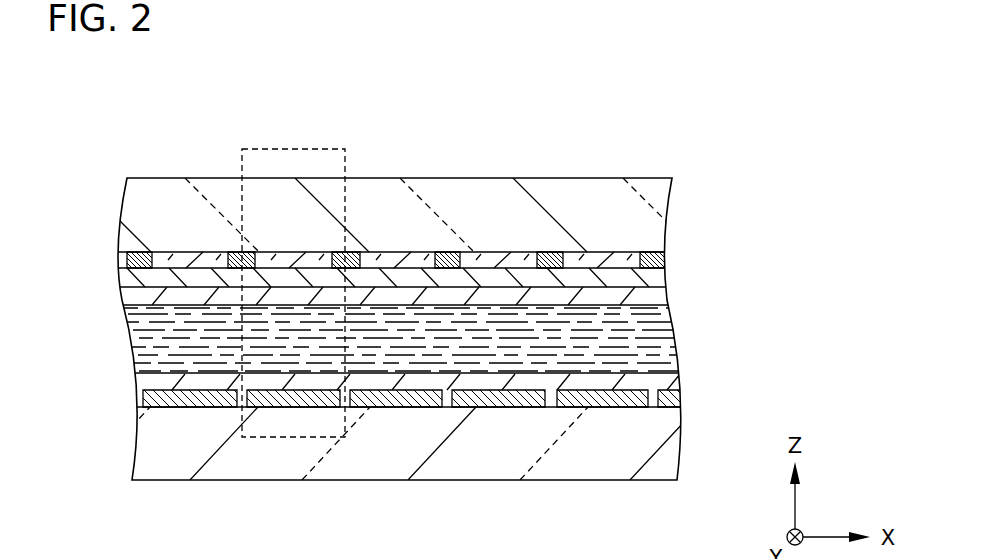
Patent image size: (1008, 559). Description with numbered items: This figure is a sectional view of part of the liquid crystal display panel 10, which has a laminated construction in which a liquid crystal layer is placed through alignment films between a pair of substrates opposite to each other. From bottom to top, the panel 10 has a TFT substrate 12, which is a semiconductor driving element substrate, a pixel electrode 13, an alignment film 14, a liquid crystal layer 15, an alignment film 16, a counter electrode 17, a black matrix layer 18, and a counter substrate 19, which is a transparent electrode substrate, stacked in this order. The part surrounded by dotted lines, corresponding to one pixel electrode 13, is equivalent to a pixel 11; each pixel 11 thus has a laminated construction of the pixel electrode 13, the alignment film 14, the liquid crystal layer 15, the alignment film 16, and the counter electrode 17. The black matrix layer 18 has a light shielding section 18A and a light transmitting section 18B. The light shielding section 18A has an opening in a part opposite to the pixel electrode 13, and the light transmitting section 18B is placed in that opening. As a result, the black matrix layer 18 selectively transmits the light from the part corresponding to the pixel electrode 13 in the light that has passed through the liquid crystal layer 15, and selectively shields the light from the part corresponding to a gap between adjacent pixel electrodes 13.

The liquid crystal display panel 10 is at (183, 106).
The pixel 11 is at (302, 149).
The TFT substrate 12 is at (670, 448).
The pixel electrode 13 is at (675, 398).
The alignment film 14 is at (672, 378).
The liquid crystal layer 15 is at (660, 343).
The alignment film 16 is at (658, 295).
The counter electrode 17 is at (653, 277).
The black matrix layer 18 is at (449, 235).
The light shielding section 18A is at (556, 252).
The light transmitting section 18B is at (619, 252).
The counter substrate 19 is at (660, 195).